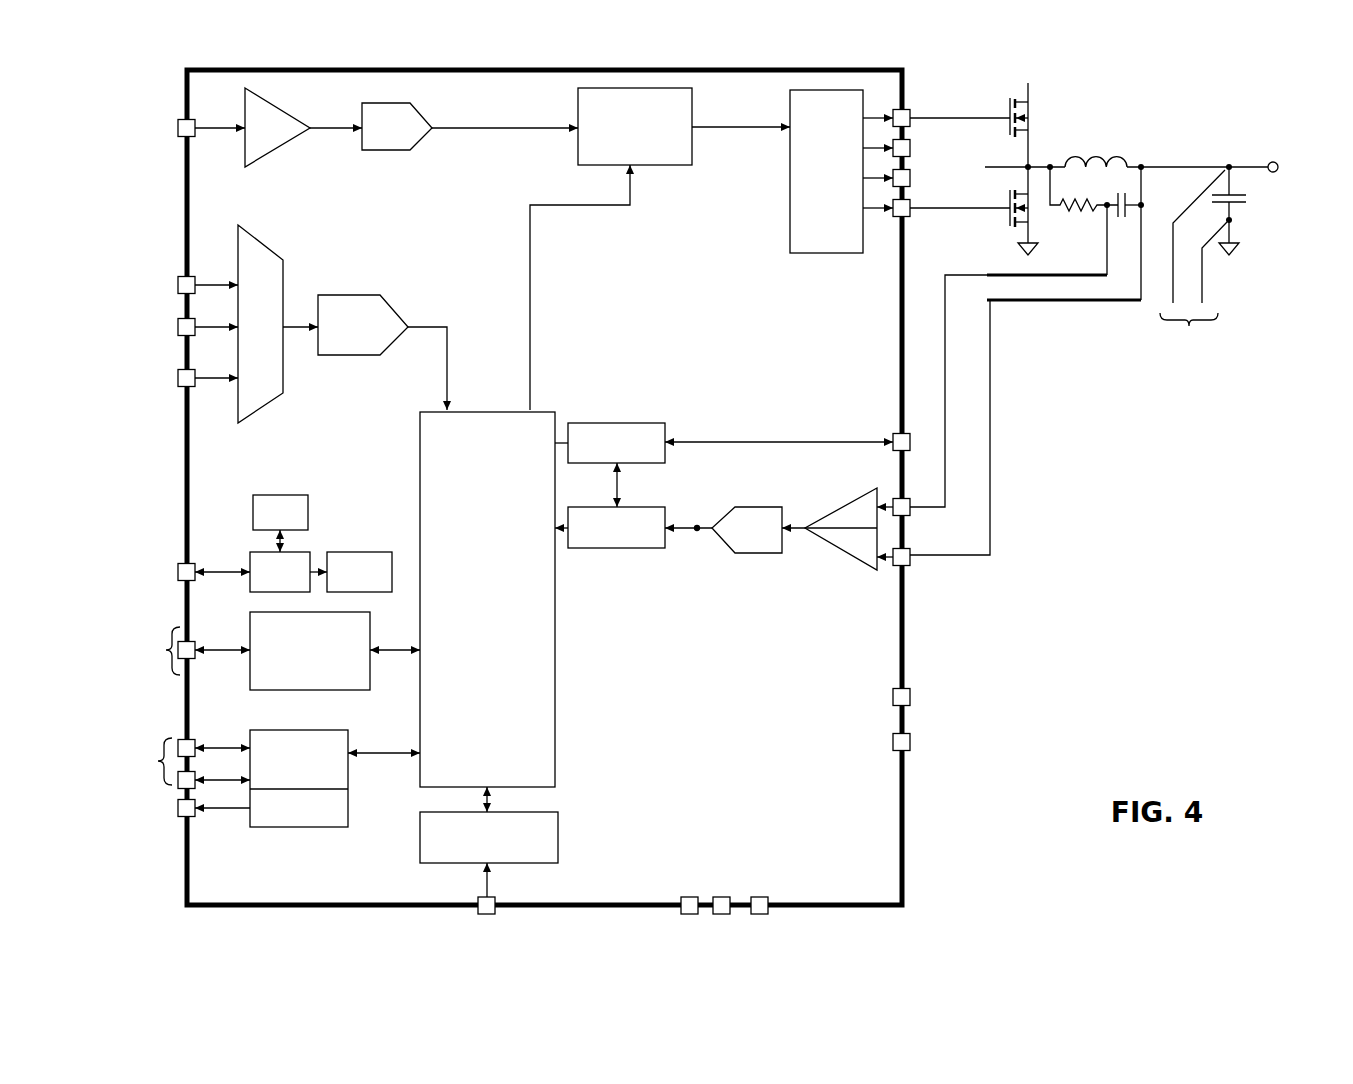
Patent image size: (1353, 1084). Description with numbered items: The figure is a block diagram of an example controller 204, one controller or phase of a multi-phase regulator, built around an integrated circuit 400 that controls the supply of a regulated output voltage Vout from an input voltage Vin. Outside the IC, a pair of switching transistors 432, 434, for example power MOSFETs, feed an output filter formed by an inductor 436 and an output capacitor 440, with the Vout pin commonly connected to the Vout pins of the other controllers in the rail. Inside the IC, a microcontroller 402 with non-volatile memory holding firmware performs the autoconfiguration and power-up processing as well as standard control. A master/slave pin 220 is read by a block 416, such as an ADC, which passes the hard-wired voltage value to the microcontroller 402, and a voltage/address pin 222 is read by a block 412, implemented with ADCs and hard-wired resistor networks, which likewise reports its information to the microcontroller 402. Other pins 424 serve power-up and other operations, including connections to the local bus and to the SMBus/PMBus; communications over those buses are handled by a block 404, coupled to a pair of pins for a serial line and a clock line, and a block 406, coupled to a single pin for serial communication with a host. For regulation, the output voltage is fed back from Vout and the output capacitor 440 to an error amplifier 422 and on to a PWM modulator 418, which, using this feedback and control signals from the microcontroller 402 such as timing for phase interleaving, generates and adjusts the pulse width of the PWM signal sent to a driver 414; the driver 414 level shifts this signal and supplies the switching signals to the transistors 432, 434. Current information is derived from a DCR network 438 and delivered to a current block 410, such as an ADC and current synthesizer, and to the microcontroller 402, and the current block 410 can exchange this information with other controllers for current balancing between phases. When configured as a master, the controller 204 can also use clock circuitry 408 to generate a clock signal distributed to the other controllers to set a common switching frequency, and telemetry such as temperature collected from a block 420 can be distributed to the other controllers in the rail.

The controller 204 is at (1146, 518).
The integrated circuit 400 is at (737, 822).
The microcontroller 402 is at (487, 599).
The block 404 is at (307, 778).
The block 406 is at (307, 651).
The clock circuitry 408 is at (333, 526).
The current block 410 is at (684, 489).
The block 412 is at (489, 842).
The driver 414 is at (841, 171).
The block 416 is at (271, 804).
The PWM modulator 418 is at (611, 249).
The block 420 is at (321, 279).
The error amplifier 422 is at (303, 180).
The other pins 424 is at (697, 888).
The master/slave pin 220 is at (178, 812).
The voltage/address pin 222 is at (492, 915).
The switching transistor 432 is at (1035, 113).
The switching transistor 434 is at (1015, 230).
The inductor 436 is at (1113, 152).
The DCR network 438 is at (1087, 230).
The capacitor 440 is at (1245, 208).